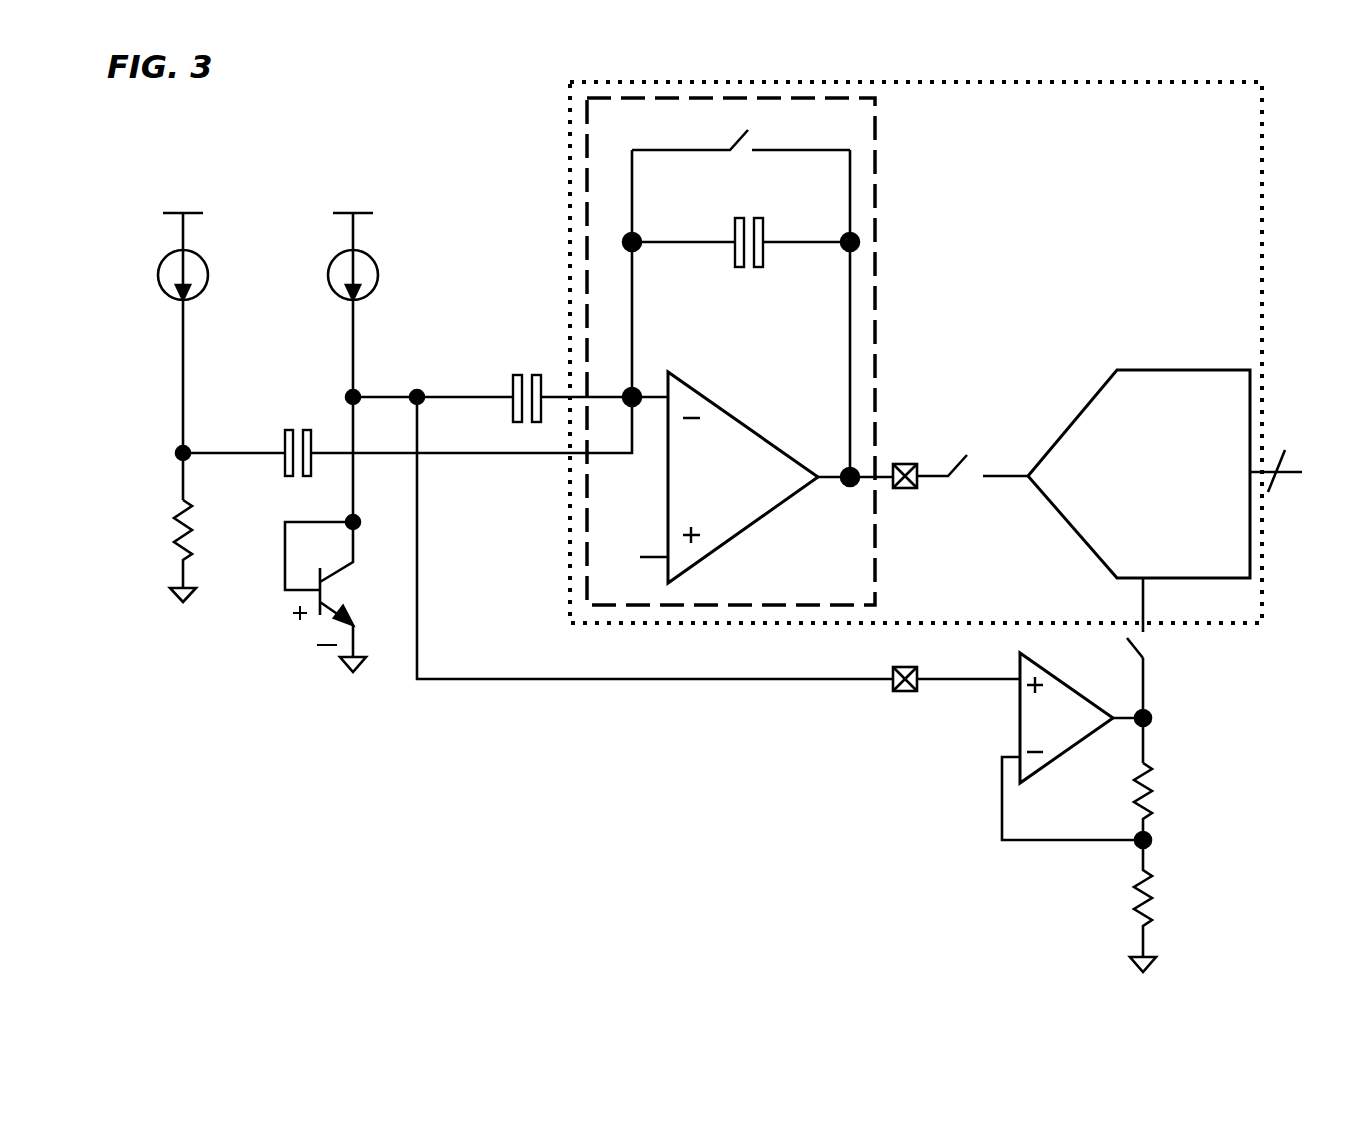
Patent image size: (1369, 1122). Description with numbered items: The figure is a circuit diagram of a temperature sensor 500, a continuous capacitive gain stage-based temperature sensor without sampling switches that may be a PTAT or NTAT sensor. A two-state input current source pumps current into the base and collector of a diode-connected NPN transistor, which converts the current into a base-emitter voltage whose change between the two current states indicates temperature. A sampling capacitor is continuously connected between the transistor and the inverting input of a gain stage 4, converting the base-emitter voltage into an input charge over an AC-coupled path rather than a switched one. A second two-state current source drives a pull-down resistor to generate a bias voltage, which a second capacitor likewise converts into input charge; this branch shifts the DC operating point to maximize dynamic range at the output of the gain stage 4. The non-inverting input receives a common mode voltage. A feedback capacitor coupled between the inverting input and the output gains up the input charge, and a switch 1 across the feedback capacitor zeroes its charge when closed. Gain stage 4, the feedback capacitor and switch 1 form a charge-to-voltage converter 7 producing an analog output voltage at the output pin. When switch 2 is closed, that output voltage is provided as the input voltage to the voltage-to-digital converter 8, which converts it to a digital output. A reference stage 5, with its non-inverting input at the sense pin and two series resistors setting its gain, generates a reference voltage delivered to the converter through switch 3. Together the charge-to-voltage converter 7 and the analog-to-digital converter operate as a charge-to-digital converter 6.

The switch 1 is at (741, 130).
The switch 2 is at (972, 448).
The switch 3 is at (1151, 654).
The gain stage 4 is at (729, 477).
The reference stage 5 is at (1066, 718).
The charge-to-digital converter 6 is at (570, 138).
The charge-to-voltage converter 7 is at (875, 124).
The voltage-to-digital converter 8 is at (1212, 370).
The temperature sensor 500 is at (1298, 99).